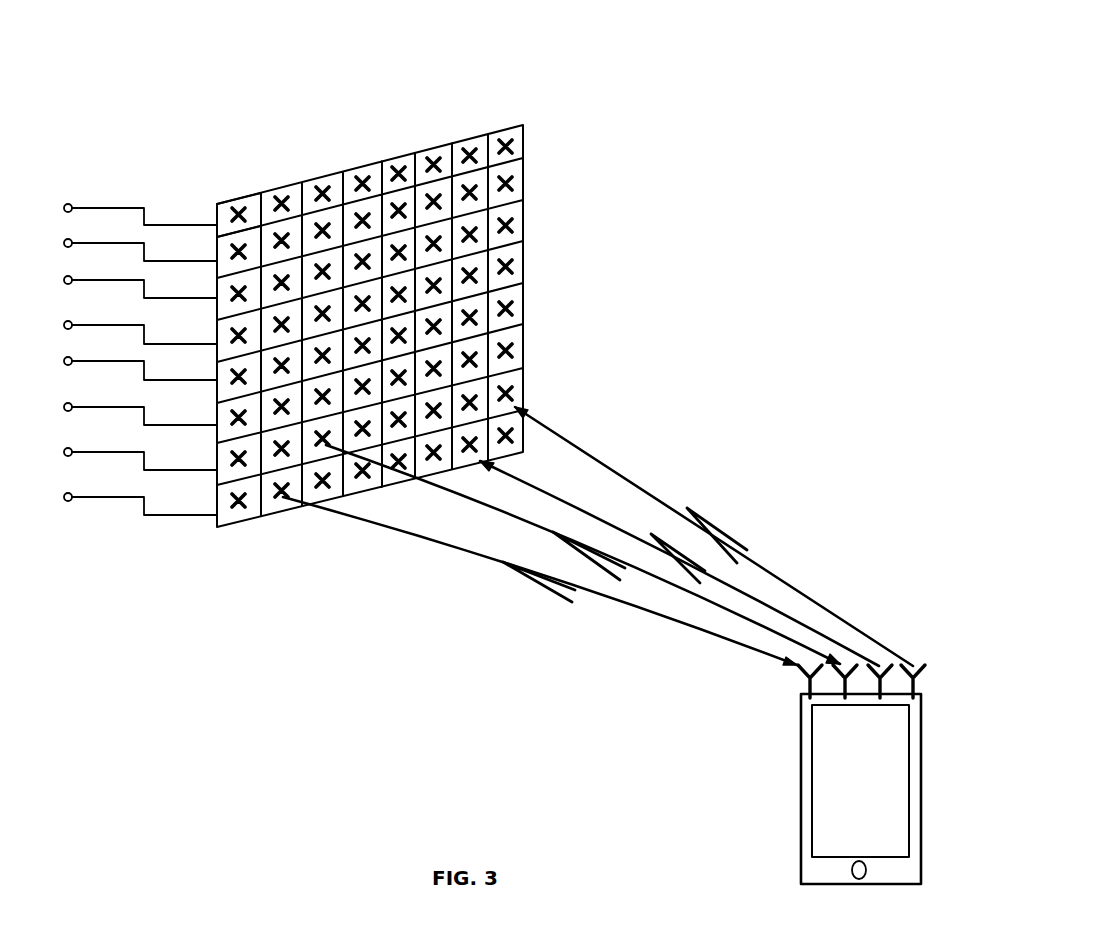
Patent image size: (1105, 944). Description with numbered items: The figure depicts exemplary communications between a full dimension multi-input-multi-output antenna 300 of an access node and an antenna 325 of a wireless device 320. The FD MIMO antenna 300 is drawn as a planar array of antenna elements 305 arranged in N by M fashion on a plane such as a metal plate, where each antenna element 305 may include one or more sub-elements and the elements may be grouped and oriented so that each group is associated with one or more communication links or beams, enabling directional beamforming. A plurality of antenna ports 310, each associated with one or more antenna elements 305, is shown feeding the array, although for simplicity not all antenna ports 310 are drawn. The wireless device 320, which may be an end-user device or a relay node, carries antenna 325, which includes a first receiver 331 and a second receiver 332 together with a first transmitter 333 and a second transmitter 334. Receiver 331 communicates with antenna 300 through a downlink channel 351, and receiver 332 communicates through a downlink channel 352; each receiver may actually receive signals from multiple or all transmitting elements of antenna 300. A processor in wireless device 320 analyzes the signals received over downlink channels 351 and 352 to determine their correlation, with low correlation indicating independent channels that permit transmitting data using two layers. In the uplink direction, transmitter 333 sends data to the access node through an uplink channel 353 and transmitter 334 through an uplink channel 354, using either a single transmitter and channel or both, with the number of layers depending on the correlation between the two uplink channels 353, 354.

The full dimension multi-input-multi-output antenna 300 is at (405, 126).
The antenna element 305 is at (250, 203).
The antenna port 310 is at (70, 203).
The wireless device 320 is at (922, 805).
The antenna 325 is at (867, 709).
The first receiver 331 is at (805, 678).
The second receiver 332 is at (848, 682).
The first transmitter 333 is at (920, 676).
The second transmitter 334 is at (917, 695).
The downlink channel 351 is at (398, 545).
The downlink channel 352 is at (473, 510).
The uplink channel 353 is at (607, 472).
The uplink channel 354 is at (745, 586).